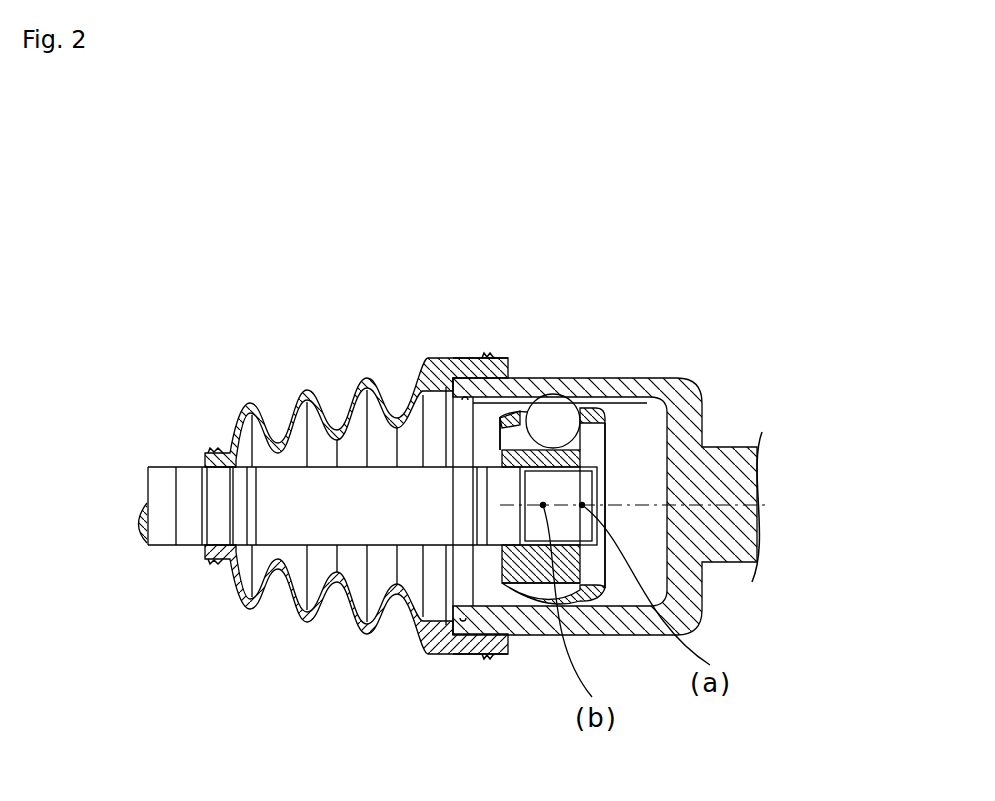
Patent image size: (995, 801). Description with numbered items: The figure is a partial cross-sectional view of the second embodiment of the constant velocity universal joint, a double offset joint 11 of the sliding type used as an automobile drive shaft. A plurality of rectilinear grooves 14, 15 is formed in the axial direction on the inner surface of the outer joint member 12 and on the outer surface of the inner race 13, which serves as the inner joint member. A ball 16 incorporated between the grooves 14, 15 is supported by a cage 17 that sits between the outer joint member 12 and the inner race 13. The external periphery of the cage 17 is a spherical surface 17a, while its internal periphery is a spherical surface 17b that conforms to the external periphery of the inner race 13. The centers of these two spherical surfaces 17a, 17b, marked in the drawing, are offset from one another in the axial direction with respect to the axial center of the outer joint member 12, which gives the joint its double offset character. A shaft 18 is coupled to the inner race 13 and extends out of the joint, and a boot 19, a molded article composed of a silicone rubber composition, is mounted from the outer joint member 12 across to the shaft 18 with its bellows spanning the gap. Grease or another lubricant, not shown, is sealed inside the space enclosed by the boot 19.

The double offset joint 11 is at (566, 370).
The outer joint member 12 is at (683, 413).
The inner race 13 is at (567, 460).
The rectilinear groove 14 is at (453, 365).
The rectilinear groove 15 is at (503, 410).
The ball 16 is at (548, 418).
The cage 17 is at (590, 412).
The spherical surface 17a is at (613, 417).
The spherical surface 17b is at (510, 428).
The shaft 18 is at (198, 482).
The boot 19 is at (245, 405).